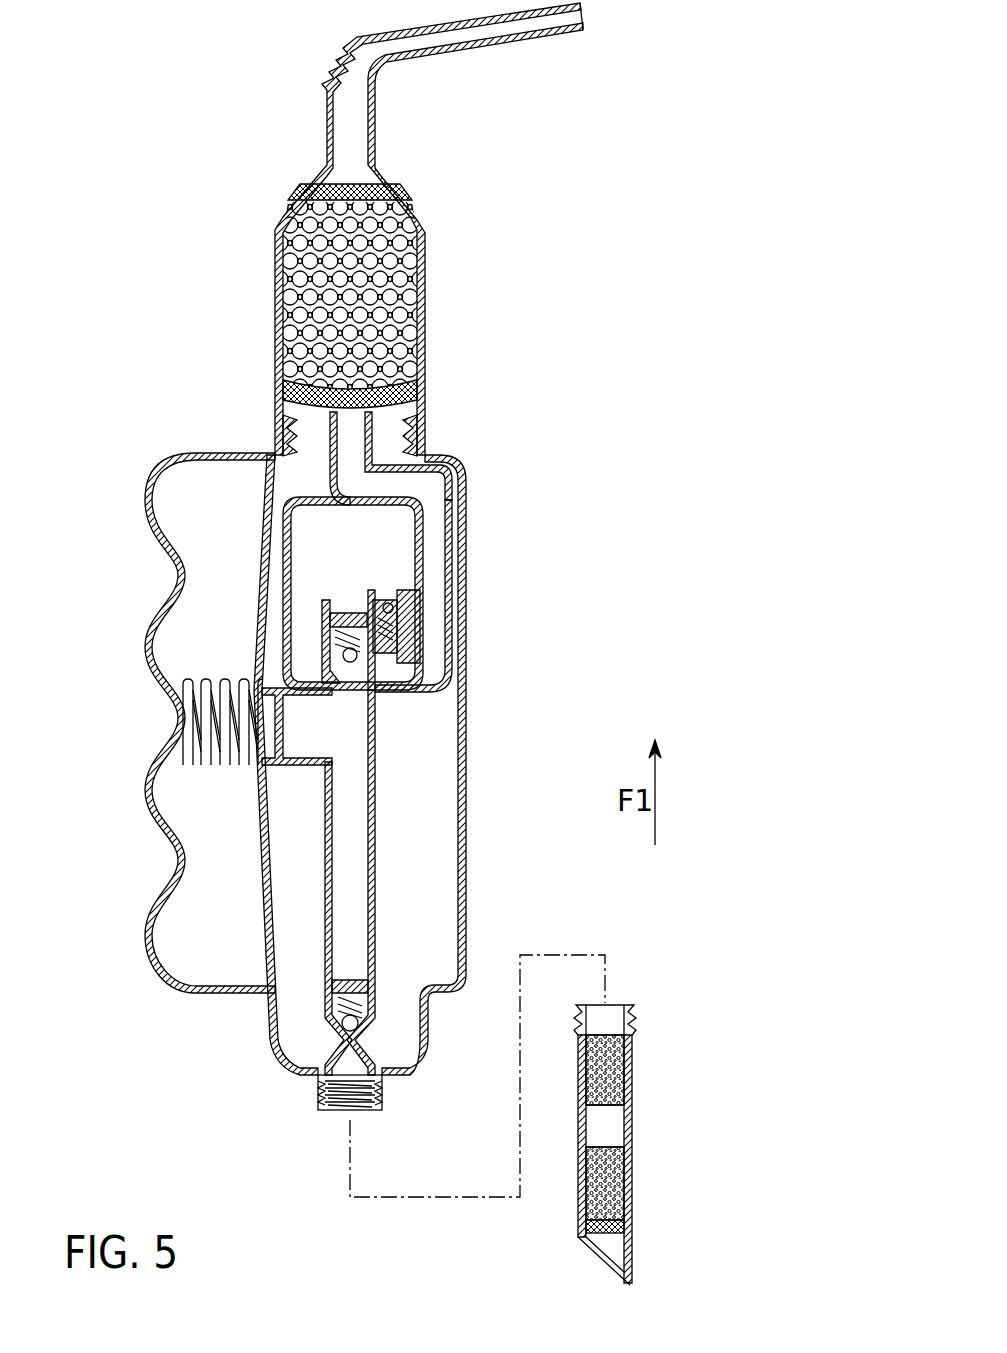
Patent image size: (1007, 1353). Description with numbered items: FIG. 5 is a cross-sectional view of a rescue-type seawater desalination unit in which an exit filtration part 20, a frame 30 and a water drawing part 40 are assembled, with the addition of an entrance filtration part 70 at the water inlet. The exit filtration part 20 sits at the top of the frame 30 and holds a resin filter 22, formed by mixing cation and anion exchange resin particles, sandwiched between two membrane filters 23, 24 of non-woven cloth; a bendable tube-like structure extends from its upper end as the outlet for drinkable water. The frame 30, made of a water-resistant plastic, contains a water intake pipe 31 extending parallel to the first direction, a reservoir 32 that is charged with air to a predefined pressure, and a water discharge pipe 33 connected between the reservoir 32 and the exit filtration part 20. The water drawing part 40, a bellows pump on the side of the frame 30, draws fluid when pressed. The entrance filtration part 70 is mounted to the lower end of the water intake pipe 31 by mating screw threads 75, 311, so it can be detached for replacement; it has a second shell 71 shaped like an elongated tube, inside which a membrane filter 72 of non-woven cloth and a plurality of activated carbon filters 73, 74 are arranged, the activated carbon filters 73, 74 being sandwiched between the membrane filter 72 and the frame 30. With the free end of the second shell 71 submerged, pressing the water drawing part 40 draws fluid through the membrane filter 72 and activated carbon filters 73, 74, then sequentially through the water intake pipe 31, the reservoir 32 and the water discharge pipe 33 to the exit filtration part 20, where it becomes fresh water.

The exit filtration part 20 is at (264, 124).
The resin filter 22 is at (392, 332).
The membrane filter 23 is at (405, 384).
The membrane filter 24 is at (318, 192).
The frame 30 is at (483, 778).
The water intake pipe 31 is at (358, 873).
The screw thread 311 is at (348, 1098).
The reservoir 32 is at (312, 545).
The water discharge pipe 33 is at (445, 550).
The water drawing part 40 is at (120, 779).
The entrance filtration part 70 is at (736, 1128).
The second shell 71 is at (632, 1118).
The membrane filter 72 is at (632, 1226).
The activated carbon filter 73 is at (632, 1176).
The activated carbon filter 74 is at (632, 1068).
The screw thread 75 is at (632, 1012).